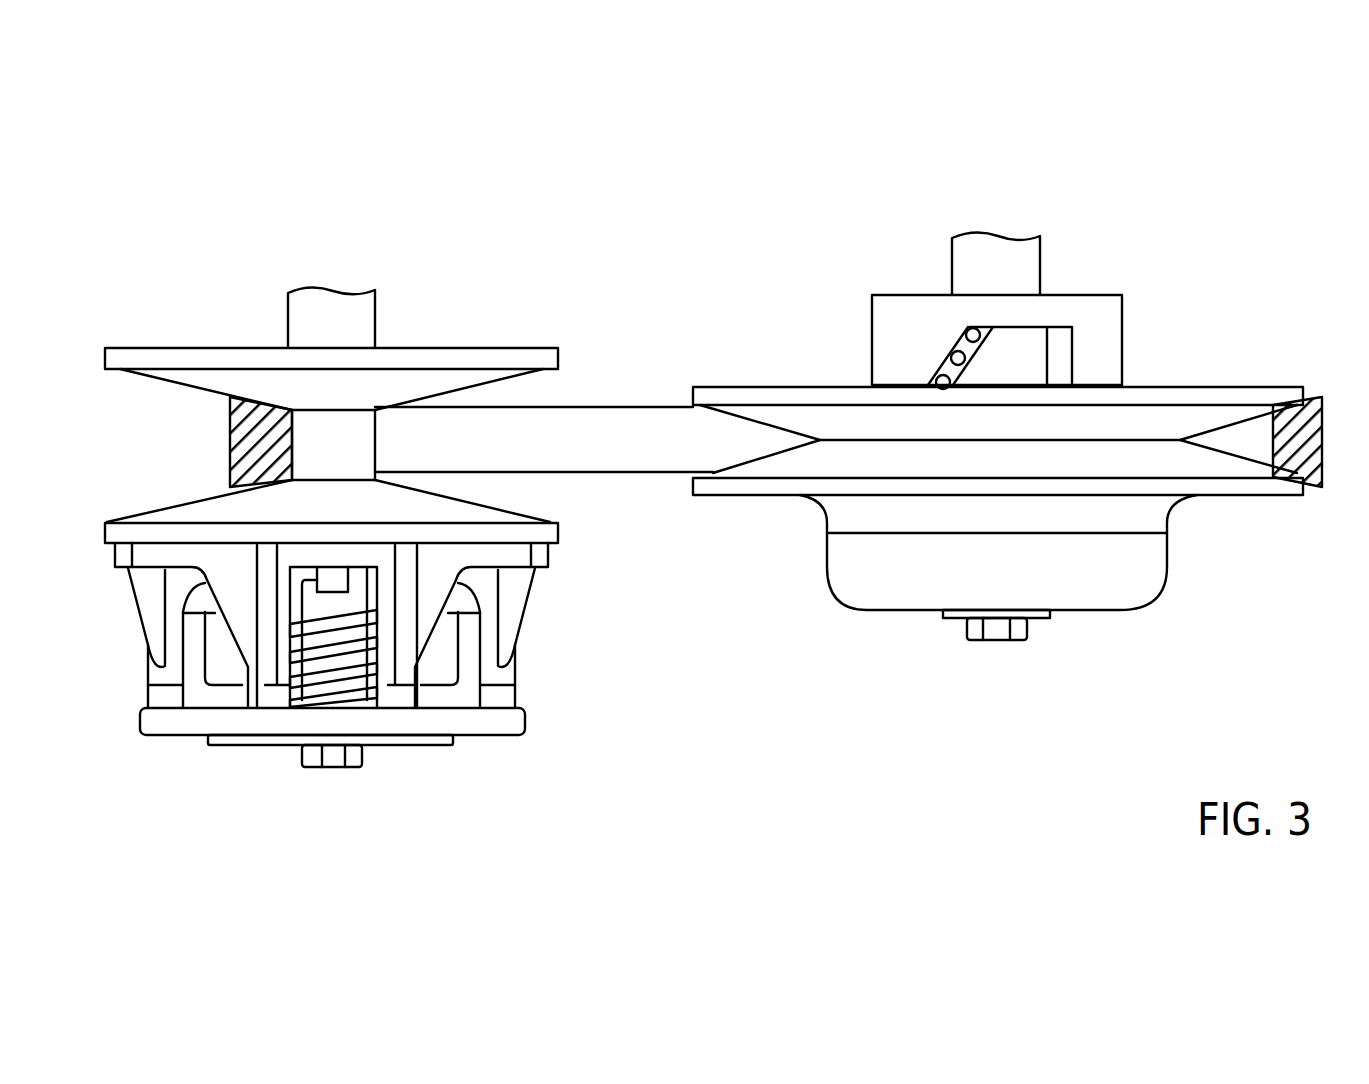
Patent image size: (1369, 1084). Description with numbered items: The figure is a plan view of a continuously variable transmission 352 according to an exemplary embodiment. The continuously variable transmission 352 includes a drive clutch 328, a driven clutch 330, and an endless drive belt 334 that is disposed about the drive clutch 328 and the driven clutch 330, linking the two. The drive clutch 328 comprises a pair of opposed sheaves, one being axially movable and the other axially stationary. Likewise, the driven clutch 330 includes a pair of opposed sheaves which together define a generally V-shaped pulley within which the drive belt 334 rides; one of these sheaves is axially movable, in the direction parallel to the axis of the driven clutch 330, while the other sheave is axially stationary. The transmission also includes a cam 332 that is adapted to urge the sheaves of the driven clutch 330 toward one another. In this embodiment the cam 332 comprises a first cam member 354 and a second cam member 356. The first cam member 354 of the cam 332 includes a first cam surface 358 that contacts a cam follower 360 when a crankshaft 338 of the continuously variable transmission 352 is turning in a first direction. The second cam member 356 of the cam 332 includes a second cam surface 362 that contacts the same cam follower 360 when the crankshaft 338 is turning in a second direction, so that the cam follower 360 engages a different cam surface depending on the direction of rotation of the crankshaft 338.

The drive clutch 328 is at (491, 344).
The driven clutch 330 is at (1218, 386).
The cam 332 is at (1099, 270).
The endless drive belt 334 is at (622, 476).
The crankshaft 338 is at (376, 315).
The continuously variable transmission 352 is at (824, 735).
The first cam member 354 is at (893, 294).
The second cam member 356 is at (1005, 360).
The first cam surface 358 is at (974, 337).
The cam follower 360 is at (957, 363).
The second cam surface 362 is at (928, 378).